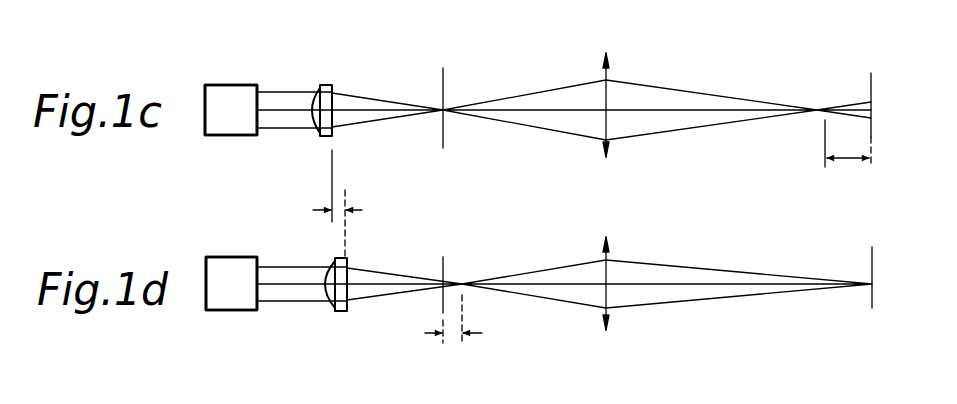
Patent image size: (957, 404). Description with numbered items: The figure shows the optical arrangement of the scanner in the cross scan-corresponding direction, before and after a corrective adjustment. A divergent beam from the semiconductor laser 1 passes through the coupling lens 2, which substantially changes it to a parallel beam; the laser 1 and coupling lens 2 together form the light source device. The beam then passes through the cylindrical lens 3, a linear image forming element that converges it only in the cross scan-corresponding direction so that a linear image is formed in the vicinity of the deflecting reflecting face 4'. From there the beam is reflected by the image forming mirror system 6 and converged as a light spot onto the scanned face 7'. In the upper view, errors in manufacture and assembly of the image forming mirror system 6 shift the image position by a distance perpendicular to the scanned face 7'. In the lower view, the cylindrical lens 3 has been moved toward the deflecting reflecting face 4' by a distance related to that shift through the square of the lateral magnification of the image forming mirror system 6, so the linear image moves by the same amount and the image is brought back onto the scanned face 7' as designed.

In FIG. 1C, the semiconductor laser 1 is at (233, 92).
In FIG. 1D, the semiconductor laser 1 is at (233, 266).
In FIG. 1C, the coupling lens 2 is at (233, 92).
In FIG. 1D, the coupling lens 2 is at (233, 266).
In FIG. 1C, the cylindrical lens 3 is at (325, 86).
In FIG. 1D, the cylindrical lens 3 is at (347, 260).
In FIG. 1C, the deflecting reflecting face 4' is at (464, 92).
In FIG. 1D, the deflecting reflecting face 4' is at (465, 271).
In FIG. 1C, the image forming mirror system 6 is at (606, 78).
In FIG. 1D, the image forming mirror system 6 is at (606, 257).
In FIG. 1C, the scanned face 7' is at (850, 106).
In FIG. 1D, the scanned face 7' is at (852, 269).